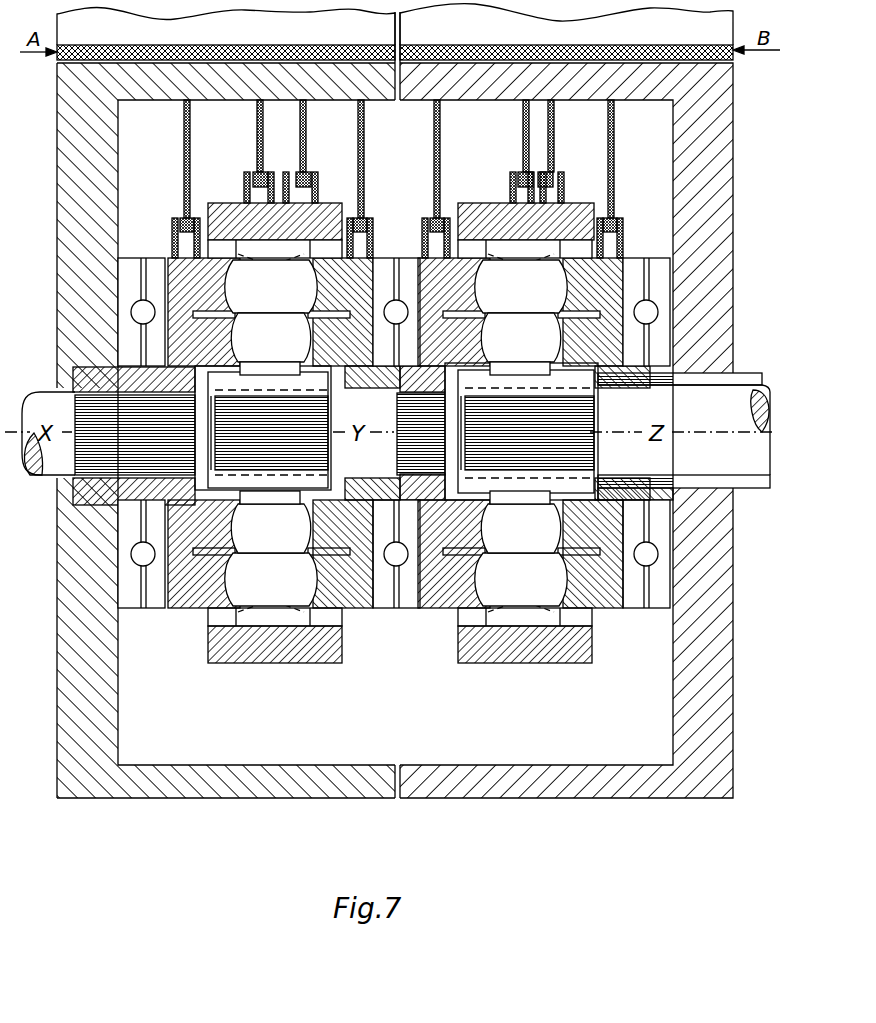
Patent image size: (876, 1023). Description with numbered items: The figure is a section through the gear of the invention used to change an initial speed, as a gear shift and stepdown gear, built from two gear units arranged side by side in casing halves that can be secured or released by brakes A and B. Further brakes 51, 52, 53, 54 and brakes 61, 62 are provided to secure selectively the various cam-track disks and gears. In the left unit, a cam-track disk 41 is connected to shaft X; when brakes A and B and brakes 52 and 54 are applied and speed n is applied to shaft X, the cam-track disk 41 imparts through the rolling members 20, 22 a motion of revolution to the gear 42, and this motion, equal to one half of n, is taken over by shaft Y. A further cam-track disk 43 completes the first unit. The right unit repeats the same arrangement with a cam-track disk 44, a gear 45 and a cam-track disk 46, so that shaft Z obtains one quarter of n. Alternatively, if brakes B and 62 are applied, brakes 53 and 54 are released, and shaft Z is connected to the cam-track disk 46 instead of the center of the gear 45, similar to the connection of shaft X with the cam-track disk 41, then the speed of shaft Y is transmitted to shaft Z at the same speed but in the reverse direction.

The rolling member 20 is at (396, 433).
The rolling member 22 is at (396, 433).
The cam-track disk 41 is at (185, 616).
The gear 42 is at (272, 672).
The cam-track disk 43 is at (352, 616).
The cam-track disk 44 is at (454, 630).
The gear 45 is at (525, 693).
The cam-track disk 46 is at (606, 619).
The brake 51 is at (195, 179).
The brake 52 is at (372, 179).
The brake 53 is at (445, 179).
The brake 54 is at (622, 179).
The brake 61 is at (275, 170).
The brake 62 is at (526, 170).